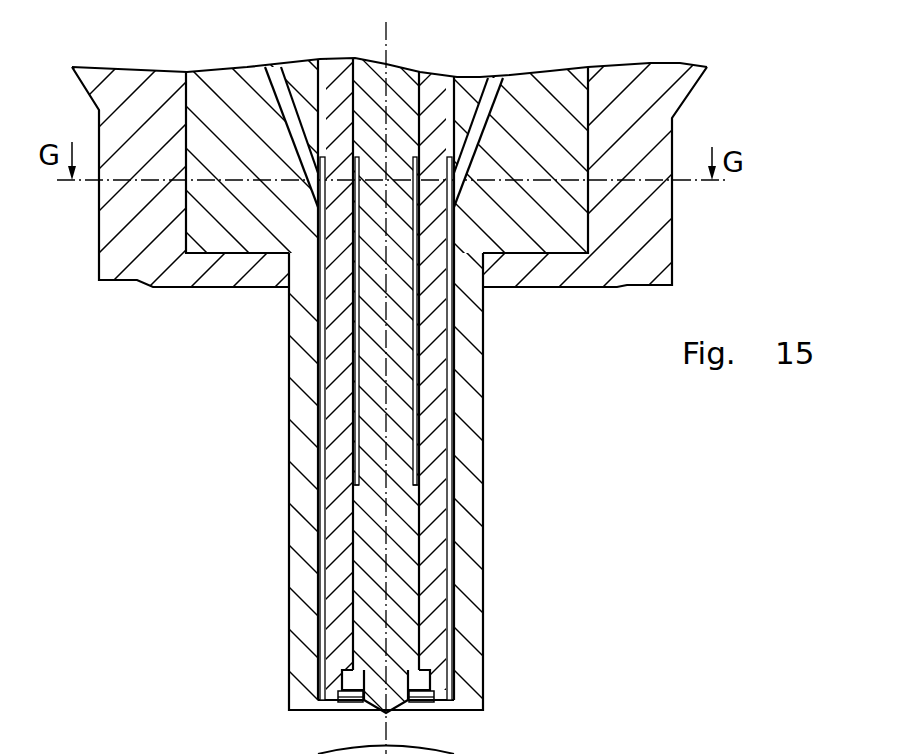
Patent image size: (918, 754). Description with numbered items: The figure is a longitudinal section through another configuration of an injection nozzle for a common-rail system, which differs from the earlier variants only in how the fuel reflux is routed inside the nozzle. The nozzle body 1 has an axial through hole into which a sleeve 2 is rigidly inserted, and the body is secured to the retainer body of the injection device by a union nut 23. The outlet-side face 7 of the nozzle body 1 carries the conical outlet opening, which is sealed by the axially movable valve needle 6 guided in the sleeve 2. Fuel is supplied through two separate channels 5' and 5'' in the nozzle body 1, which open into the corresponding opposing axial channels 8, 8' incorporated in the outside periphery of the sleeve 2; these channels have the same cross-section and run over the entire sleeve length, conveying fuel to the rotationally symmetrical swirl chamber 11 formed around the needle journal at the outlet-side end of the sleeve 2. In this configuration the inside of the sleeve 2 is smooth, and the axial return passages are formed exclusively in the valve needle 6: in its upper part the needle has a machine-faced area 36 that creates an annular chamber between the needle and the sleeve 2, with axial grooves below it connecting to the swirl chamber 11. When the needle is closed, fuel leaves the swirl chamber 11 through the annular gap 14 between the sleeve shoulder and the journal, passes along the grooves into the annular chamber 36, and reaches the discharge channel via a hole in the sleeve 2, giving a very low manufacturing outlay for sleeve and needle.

The nozzle body 1 is at (468, 586).
The sleeve 2 is at (438, 626).
The channel 5' is at (478, 103).
The channel 5'' is at (291, 103).
The valve needle 6 is at (413, 518).
The outlet-side face 7 is at (386, 713).
The channel 8 is at (510, 428).
The channel 8' is at (261, 428).
The swirl chamber 11 is at (424, 699).
The annular gap 14 is at (342, 694).
The union nut 23 is at (217, 275).
The machine-faced area 36 is at (399, 432).